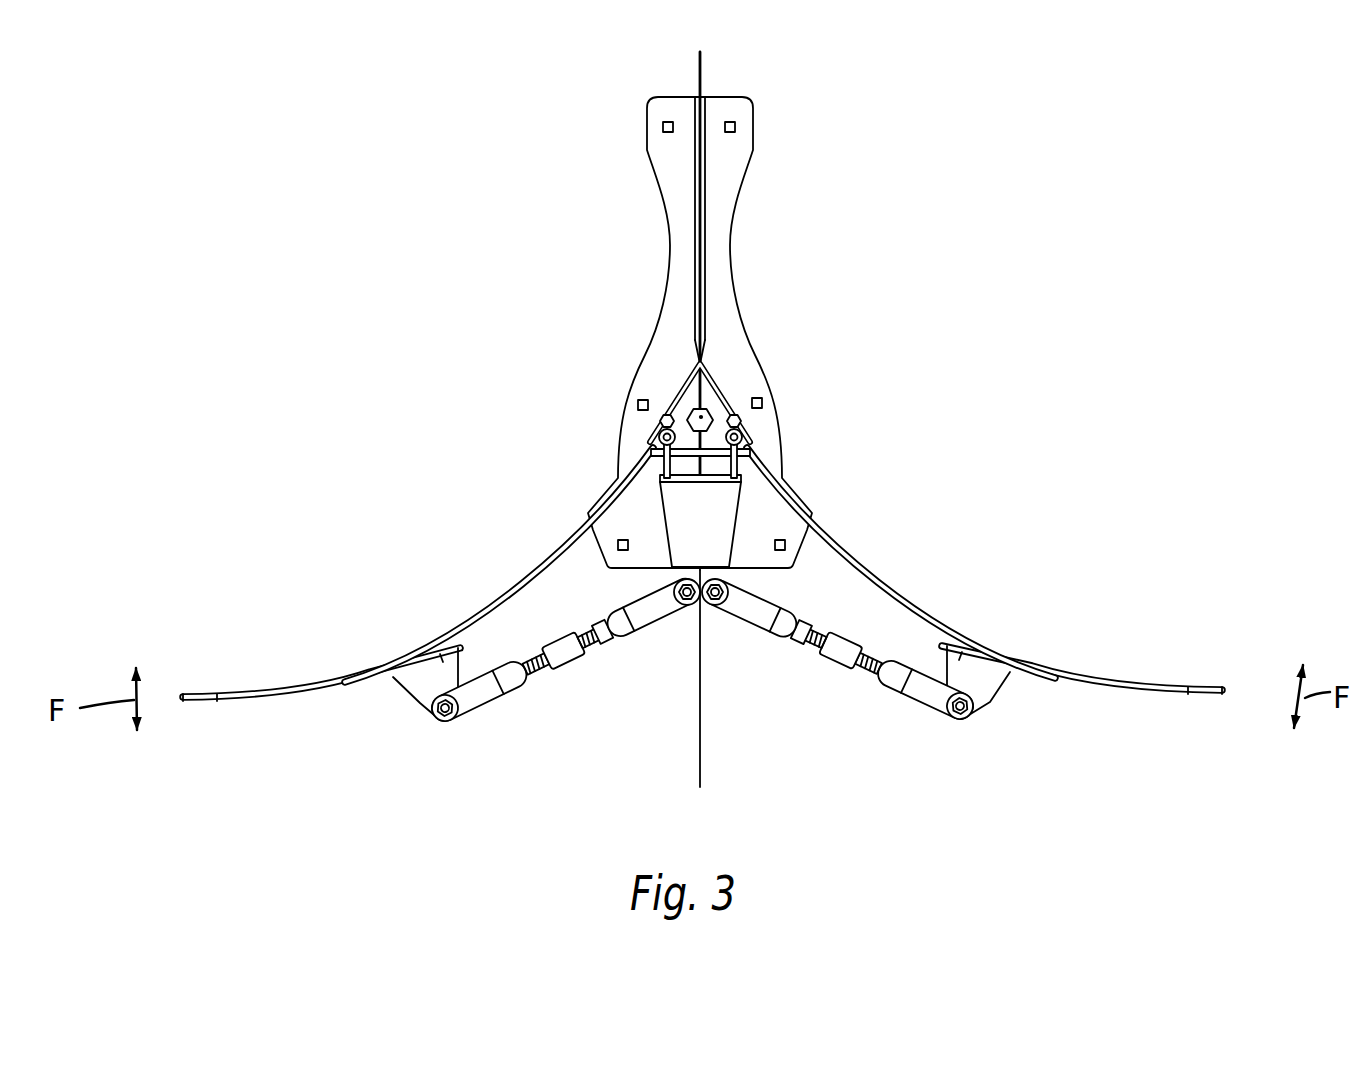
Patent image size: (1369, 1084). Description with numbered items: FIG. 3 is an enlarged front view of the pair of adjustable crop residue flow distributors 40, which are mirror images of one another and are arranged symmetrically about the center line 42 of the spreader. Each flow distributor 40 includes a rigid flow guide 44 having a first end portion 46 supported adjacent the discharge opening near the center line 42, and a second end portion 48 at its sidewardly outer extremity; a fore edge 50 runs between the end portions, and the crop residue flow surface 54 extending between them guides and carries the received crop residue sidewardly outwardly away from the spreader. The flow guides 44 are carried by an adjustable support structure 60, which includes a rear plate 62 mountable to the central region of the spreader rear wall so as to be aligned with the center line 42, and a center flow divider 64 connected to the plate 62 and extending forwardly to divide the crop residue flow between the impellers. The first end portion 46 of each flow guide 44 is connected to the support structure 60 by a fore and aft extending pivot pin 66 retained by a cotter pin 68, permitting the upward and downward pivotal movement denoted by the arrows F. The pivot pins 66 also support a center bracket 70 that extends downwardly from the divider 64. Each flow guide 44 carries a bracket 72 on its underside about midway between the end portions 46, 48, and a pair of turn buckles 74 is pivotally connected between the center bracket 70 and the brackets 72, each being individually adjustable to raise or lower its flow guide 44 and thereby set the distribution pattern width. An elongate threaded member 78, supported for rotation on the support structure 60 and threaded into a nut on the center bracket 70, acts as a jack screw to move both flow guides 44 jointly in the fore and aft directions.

The adjustable crop residue flow distributor 40 is at (203, 699).
The center line 42 is at (702, 770).
The flow guide 44 is at (322, 698).
The first end portion 46 is at (640, 466).
The second end portion 48 is at (187, 693).
The fore edge 50 is at (342, 678).
The crop residue flow surface 54 is at (387, 667).
The adjustable support structure 60 is at (769, 371).
The rear plate 62 is at (733, 302).
The center flow divider 64 is at (708, 215).
The pivot pin 66 is at (658, 434).
The cotter pin 68 is at (667, 412).
The center bracket 70 is at (735, 547).
The bracket 72 is at (418, 704).
The turn buckle 74 is at (567, 667).
The elongate threaded member 78 is at (707, 407).